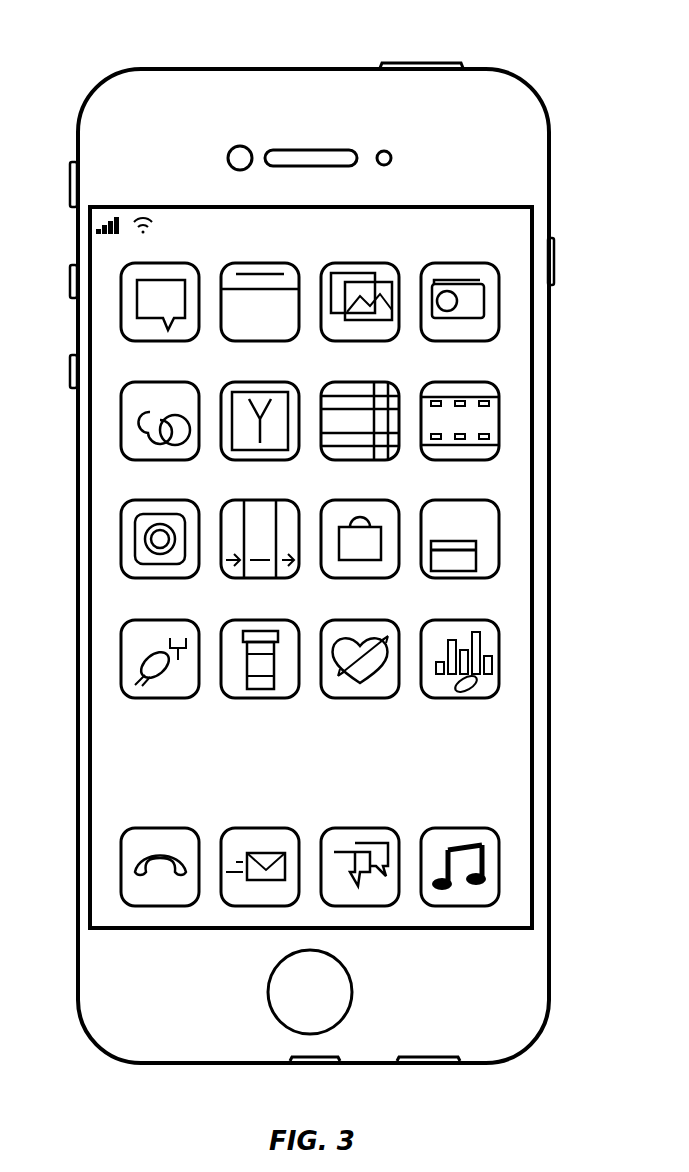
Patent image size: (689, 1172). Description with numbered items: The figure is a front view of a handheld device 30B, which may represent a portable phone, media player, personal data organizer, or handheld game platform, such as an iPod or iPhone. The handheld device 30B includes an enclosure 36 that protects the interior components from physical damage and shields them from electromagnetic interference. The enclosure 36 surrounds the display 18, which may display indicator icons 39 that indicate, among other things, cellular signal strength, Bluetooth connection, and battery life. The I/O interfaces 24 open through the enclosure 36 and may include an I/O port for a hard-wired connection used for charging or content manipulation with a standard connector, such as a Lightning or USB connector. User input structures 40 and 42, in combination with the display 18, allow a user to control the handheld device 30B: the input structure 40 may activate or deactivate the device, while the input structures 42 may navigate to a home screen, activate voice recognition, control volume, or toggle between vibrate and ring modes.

The handheld device 30B is at (82, 70).
The enclosure 36 is at (553, 160).
The input structure 40 is at (424, 64).
The input structures 42 is at (70, 185).
The I/O interfaces 24 is at (311, 1066).
The display 18 is at (533, 477).
The indicator icons 39 is at (144, 208).